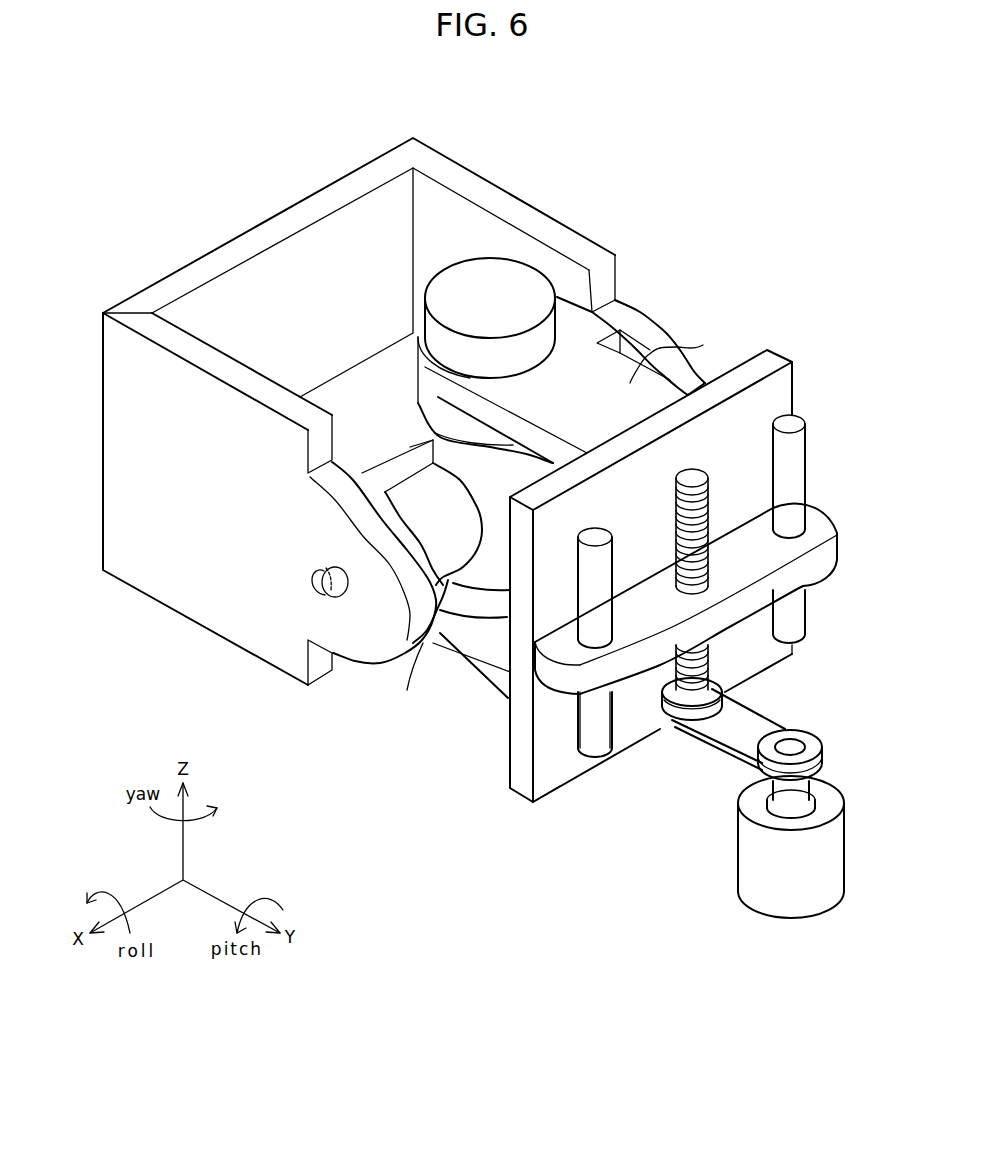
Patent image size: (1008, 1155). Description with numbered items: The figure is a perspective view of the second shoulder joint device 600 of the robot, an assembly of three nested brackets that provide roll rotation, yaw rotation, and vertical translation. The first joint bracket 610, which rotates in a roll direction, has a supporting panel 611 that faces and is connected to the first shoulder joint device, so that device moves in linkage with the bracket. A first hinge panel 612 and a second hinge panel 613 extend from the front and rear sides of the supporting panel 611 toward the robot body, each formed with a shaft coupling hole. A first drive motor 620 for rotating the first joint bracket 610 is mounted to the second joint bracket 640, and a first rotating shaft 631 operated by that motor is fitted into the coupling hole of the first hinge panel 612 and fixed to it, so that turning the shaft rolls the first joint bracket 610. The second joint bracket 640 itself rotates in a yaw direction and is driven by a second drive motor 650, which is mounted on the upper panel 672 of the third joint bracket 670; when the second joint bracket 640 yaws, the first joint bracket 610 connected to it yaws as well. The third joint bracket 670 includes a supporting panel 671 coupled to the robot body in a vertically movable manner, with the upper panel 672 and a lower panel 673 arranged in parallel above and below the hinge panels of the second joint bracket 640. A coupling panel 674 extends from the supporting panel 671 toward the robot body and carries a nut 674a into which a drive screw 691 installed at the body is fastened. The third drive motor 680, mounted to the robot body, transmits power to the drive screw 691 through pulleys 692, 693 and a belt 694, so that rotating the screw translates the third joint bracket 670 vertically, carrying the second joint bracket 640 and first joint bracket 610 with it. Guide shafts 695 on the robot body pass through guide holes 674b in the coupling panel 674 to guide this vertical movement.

The second shoulder joint device 600 is at (628, 142).
The first joint bracket 610 is at (245, 190).
The supporting panel 611 is at (193, 265).
The first hinge panel 612 is at (362, 648).
The second hinge panel 613 is at (653, 320).
The first drive motor 620 is at (423, 643).
The first rotating shaft 631 is at (328, 582).
The second joint bracket 640 is at (348, 348).
The second drive motor 650 is at (510, 277).
The third joint bracket 670 is at (808, 350).
The supporting panel 671 is at (782, 395).
The upper panel 672 is at (703, 345).
The lower panel 673 is at (495, 680).
The coupling panel 674 is at (827, 520).
The nut 674a is at (697, 585).
The guide holes 674b is at (570, 757).
The third drive motor 680 is at (752, 887).
The drive screw 691 is at (703, 667).
The pulley 692 is at (812, 742).
The pulley 693 is at (668, 697).
The belt 694 is at (723, 743).
The guide shafts 695 is at (587, 750).